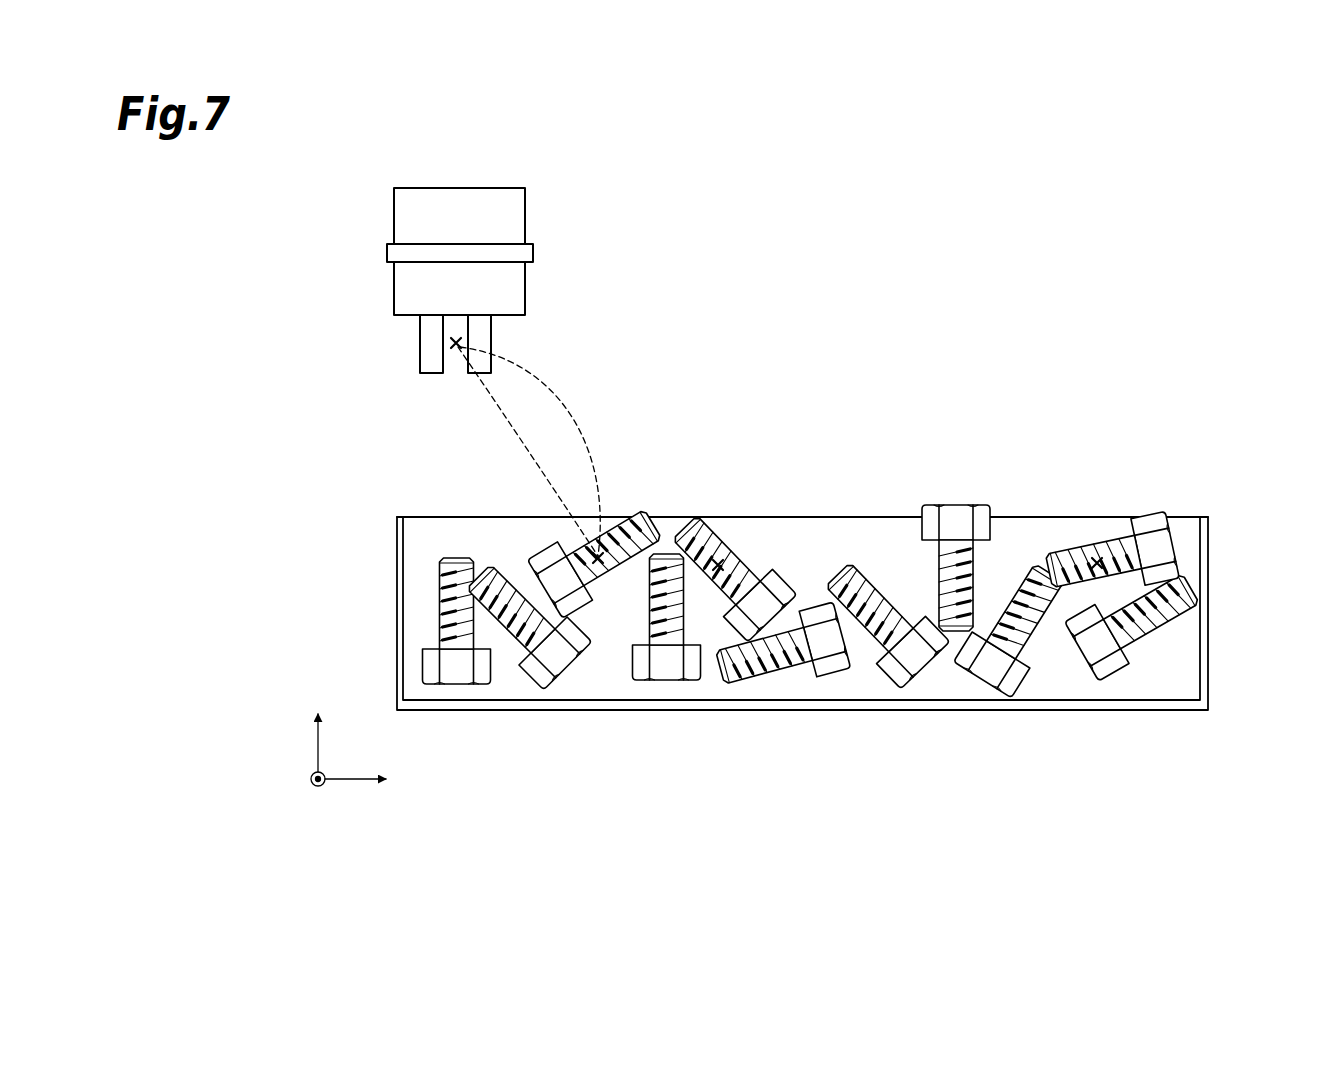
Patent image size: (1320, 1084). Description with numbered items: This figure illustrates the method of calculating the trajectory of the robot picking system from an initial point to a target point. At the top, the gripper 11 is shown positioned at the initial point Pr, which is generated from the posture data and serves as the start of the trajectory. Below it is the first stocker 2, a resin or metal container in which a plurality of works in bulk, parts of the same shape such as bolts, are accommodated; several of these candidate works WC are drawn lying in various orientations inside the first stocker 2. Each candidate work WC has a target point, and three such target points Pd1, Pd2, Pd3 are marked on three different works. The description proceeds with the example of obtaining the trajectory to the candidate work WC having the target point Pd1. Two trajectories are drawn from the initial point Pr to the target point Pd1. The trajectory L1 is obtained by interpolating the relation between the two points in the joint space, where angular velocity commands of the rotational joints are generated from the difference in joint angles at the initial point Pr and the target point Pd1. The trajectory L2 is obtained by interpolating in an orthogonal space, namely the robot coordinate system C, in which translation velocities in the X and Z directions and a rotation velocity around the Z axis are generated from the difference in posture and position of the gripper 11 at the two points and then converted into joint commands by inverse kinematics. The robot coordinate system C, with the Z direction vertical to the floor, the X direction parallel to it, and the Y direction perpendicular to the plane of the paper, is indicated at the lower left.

The gripper 11 is at (525, 210).
The first stocker 2 is at (1208, 538).
The candidate work WC is at (662, 520).
The initial point Pr is at (463, 343).
The trajectory L1 is at (557, 414).
The trajectory L2 is at (520, 443).
The target point Pd1 is at (604, 557).
The target point Pd2 is at (724, 565).
The target point Pd3 is at (1090, 553).
The robot coordinate system C is at (311, 805).